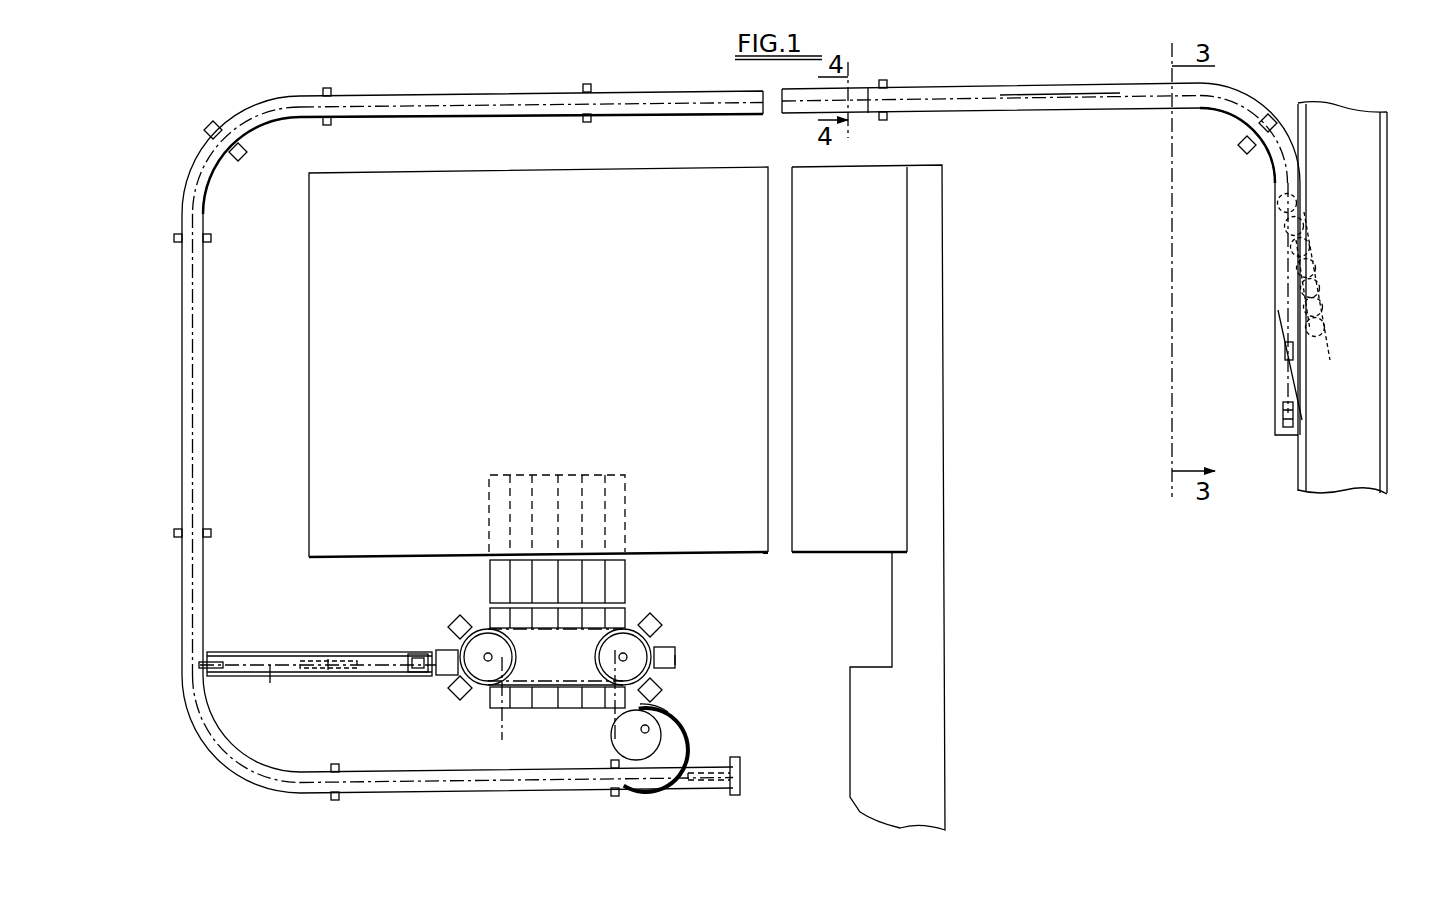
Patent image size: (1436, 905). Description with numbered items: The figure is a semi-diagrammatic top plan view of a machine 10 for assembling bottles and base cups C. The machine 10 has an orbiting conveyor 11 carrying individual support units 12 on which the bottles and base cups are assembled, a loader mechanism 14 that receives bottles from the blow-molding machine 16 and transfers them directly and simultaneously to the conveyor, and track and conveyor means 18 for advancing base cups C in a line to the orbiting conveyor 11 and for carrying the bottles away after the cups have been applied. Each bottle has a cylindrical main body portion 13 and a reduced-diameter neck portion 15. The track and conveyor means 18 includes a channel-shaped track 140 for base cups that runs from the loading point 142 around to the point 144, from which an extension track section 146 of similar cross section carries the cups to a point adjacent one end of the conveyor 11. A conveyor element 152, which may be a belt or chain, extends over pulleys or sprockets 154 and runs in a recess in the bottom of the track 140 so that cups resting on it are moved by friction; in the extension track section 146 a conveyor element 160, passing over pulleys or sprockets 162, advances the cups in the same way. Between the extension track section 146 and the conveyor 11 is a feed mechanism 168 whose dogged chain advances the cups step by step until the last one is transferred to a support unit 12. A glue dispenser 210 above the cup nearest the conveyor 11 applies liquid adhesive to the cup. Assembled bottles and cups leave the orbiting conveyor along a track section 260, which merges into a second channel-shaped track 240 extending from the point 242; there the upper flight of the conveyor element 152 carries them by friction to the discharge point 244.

The machine 10 is at (304, 680).
The orbiting conveyor 11 is at (688, 643).
The support units 12 is at (677, 683).
The cylindrical main body portion 13 is at (503, 672).
The loader mechanism 14 is at (638, 585).
The neck portion 15 is at (615, 670).
The blow-molding machine 16 is at (320, 432).
The track and conveyor means 18 is at (430, 88).
The track 140 is at (1008, 83).
The loading point 142 is at (1318, 258).
The point 144 is at (207, 655).
The extension track section 146 is at (277, 653).
The conveyor element 152 is at (1070, 98).
The pulleys or sprockets 154 is at (1283, 418).
The conveyor element 160 is at (284, 689).
The pulleys or sprockets 162 is at (310, 660).
The feed mechanism 168 is at (378, 675).
The glue dispenser 210 is at (418, 653).
The track 240 is at (203, 347).
The point 242 is at (622, 795).
The discharge point 244 is at (1285, 346).
The track section 260 is at (685, 733).
The base cups C is at (1325, 287).